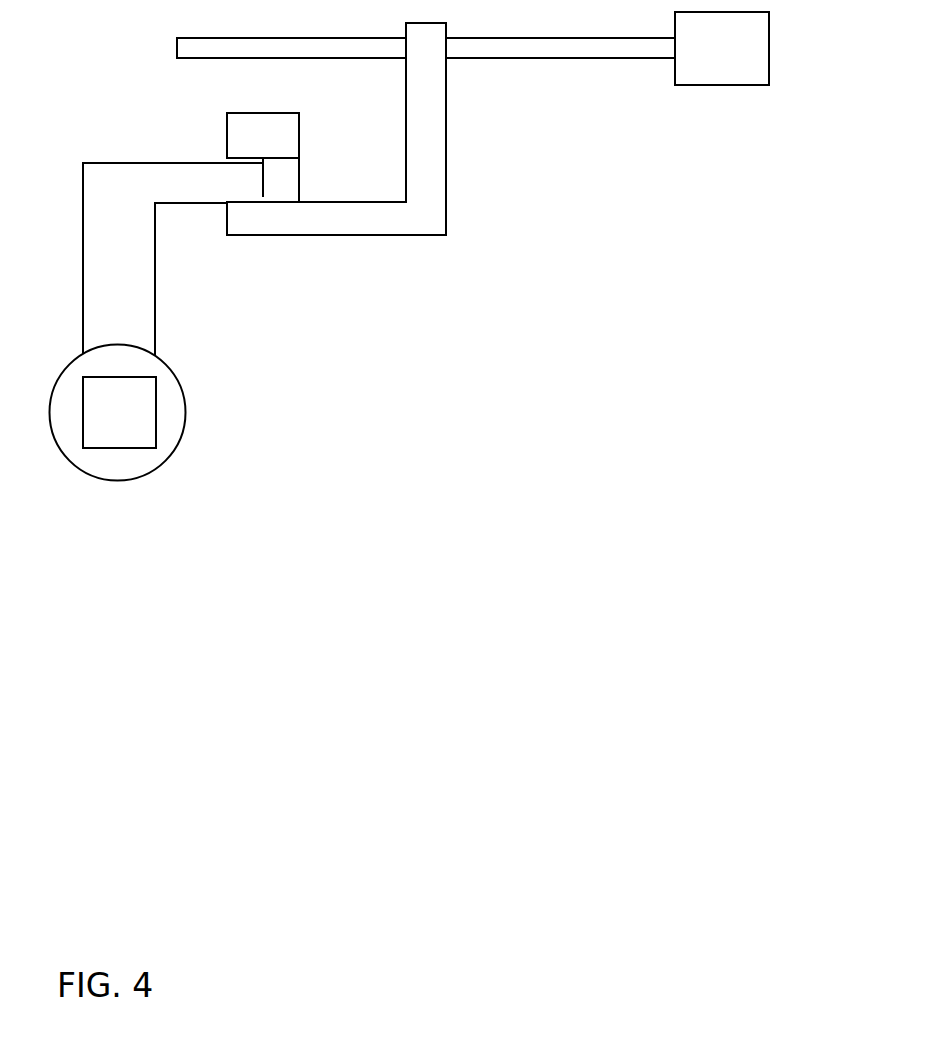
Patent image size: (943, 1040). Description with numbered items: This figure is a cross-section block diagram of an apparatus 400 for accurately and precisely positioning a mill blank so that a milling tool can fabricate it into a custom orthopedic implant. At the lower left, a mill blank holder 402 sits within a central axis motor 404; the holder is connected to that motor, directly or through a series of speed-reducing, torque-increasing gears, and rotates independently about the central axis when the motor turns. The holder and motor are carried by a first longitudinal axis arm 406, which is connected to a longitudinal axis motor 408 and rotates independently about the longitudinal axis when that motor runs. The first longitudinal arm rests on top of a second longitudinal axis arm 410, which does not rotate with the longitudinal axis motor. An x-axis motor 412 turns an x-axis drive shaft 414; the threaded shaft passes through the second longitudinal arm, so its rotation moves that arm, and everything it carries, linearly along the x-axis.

The apparatus 400 is at (700, 537).
The mill blank holder 402 is at (106, 445).
The central axis motor 404 is at (186, 395).
The first longitudinal axis arm 406 is at (153, 292).
The longitudinal axis motor 408 is at (224, 109).
The second longitudinal axis arm 410 is at (385, 230).
The x-axis motor 412 is at (720, 92).
The x-axis drive shaft 414 is at (481, 61).